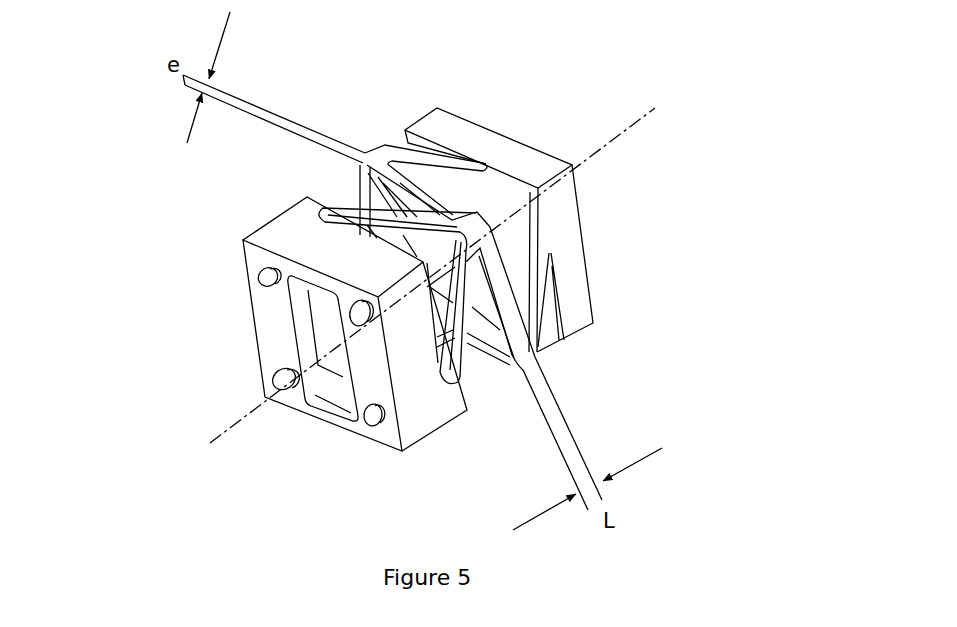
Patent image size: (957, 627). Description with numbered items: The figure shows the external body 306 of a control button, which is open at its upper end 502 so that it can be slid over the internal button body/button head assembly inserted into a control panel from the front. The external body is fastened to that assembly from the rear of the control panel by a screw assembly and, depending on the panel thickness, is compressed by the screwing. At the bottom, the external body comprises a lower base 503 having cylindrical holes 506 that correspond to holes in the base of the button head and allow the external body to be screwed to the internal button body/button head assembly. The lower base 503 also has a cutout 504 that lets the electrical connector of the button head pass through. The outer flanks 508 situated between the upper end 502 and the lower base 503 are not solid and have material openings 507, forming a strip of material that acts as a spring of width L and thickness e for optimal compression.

The external body 306 is at (430, 66).
The upper end 502 is at (569, 141).
The lower base 503 is at (298, 419).
The cutout 504 is at (324, 326).
The cylindrical holes 506 is at (256, 271).
The material openings 507 is at (542, 236).
The outer flanks 508 is at (504, 301).